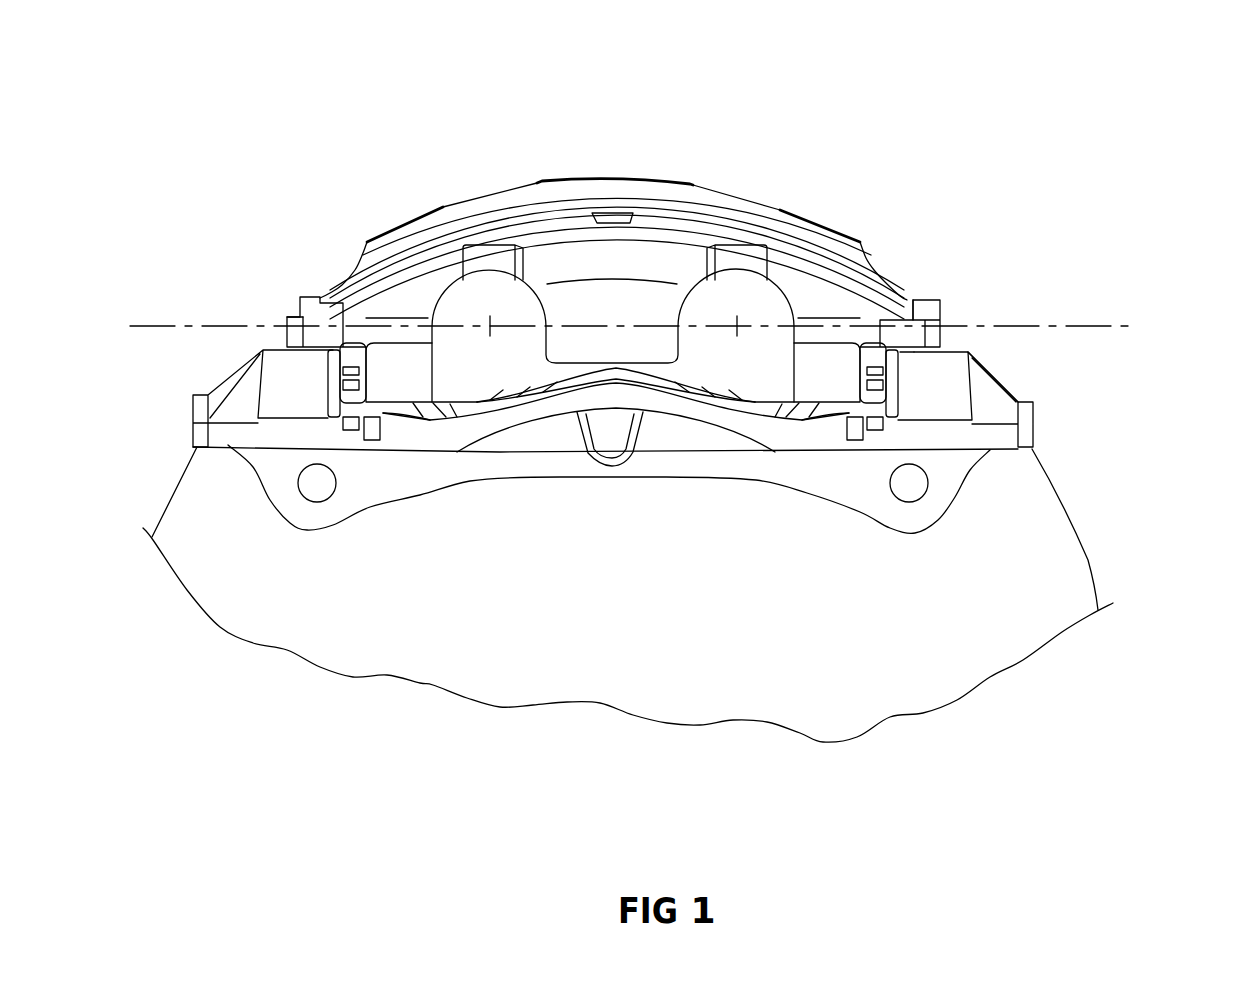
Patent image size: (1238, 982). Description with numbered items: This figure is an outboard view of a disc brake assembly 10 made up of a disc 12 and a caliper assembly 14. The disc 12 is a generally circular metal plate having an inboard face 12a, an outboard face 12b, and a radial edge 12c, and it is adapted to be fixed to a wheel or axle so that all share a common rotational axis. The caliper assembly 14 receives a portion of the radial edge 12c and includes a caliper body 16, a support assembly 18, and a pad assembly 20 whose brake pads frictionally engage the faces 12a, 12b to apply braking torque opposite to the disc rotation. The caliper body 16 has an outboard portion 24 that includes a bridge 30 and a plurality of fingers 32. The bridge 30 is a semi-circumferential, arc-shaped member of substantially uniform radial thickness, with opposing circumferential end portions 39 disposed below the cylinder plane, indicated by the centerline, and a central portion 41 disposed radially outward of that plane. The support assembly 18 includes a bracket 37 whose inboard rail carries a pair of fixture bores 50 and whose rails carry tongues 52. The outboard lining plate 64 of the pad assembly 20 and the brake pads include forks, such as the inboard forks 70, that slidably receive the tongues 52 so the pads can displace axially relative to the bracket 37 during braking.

The disc brake assembly 10 is at (1143, 102).
The disc 12 is at (1003, 637).
The inboard face 12a is at (1012, 566).
The outboard face 12b is at (801, 647).
The radial edge 12c is at (1093, 583).
The caliper assembly 14 is at (893, 258).
The caliper body 16 is at (816, 212).
The support assembly 18 is at (1084, 437).
The pad assembly 20 is at (481, 320).
The outboard portion 24 is at (690, 227).
The bridge 30 is at (763, 212).
The fingers 32 is at (807, 385).
The bracket 37 is at (982, 398).
The circumferential end portions 39 is at (912, 337).
The central portion 41 is at (607, 184).
The fixture bores 50 is at (312, 493).
The tongues 52 is at (340, 384).
The outboard lining plate 64 is at (463, 385).
The inboard forks 70 is at (352, 400).